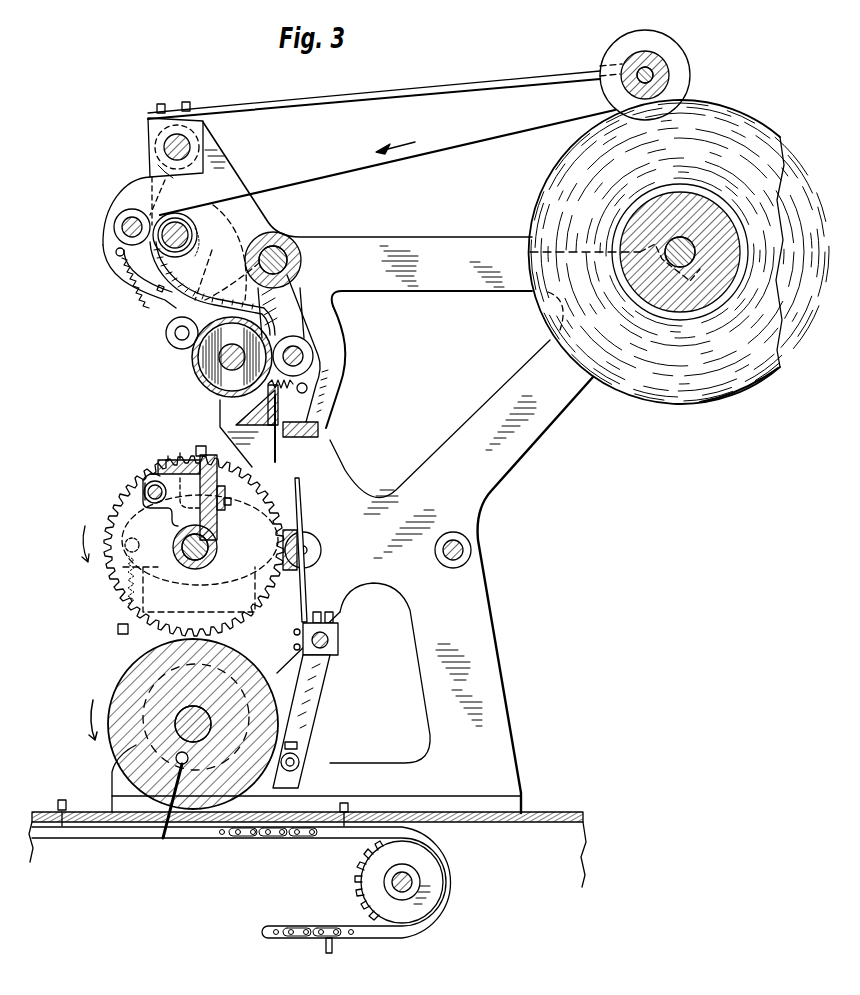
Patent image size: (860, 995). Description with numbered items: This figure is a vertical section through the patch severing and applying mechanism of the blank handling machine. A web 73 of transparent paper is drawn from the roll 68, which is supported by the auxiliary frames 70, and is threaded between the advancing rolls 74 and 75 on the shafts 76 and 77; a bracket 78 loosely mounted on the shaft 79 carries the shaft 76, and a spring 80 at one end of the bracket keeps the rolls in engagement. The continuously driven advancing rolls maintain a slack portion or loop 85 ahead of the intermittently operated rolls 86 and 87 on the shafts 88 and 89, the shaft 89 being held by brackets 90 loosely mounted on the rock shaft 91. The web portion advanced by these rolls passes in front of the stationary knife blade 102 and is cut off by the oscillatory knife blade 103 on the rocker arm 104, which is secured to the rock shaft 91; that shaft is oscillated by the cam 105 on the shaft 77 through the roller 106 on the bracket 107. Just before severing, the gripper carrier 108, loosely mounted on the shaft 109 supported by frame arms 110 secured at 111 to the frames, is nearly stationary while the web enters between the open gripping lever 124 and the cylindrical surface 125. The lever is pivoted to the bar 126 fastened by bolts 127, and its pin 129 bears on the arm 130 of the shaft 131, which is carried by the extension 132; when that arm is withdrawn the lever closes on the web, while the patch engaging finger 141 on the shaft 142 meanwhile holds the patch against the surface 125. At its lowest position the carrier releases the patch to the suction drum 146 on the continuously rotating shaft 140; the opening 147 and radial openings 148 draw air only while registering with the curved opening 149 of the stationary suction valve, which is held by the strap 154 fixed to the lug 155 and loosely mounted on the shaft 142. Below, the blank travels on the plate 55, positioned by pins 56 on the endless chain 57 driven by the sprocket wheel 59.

The plate 55 is at (540, 824).
The pins 56 is at (349, 810).
The endless chain 57 is at (329, 840).
The sprocket wheel 59 is at (437, 866).
The roll of transparent paper 68 is at (730, 120).
The auxiliary frames 70 is at (533, 438).
The web 73 is at (446, 150).
The advancing roll 74 is at (115, 222).
The advancing roll 75 is at (198, 228).
The shaft 76 is at (122, 229).
The shaft 77 is at (198, 237).
The bracket 78 is at (148, 168).
The shaft 79 is at (195, 143).
The spring 80 is at (148, 286).
The slack portion or loop 85 is at (180, 292).
The intermittently operated roll 86 is at (208, 382).
The intermittently operated roll 87 is at (293, 338).
The shaft 88 is at (243, 356).
The shaft 89 is at (305, 355).
The brackets 90 is at (318, 326).
The rock shaft 91 is at (281, 240).
The stationary knife blade 102 is at (268, 432).
The oscillatory knife blade 103 is at (300, 438).
The rocker arm 104 is at (340, 373).
The cam 105 is at (112, 275).
The roller 106 is at (166, 338).
The bracket 107 is at (250, 266).
The gripper carrier 108 is at (220, 522).
The shaft 109 is at (180, 547).
The frame arms 110 is at (306, 535).
The securing point 111 is at (318, 542).
The gripping lever 124 is at (202, 446).
The cylindrical surface 125 is at (185, 455).
The bar 126 is at (216, 490).
The bolts 127 is at (231, 501).
The pin 129 is at (169, 492).
The arm 130 is at (155, 472).
The shaft 131 is at (144, 492).
The extension 132 is at (160, 506).
The shaft 140 is at (298, 656).
The patch engaging finger 141 is at (308, 598).
The shaft 142 is at (320, 630).
The suction drum 146 is at (128, 694).
The opening 147 is at (176, 760).
The radial openings 148 is at (170, 815).
The curved opening 149 is at (140, 736).
The strap 154 is at (322, 692).
The projecting lug 155 is at (300, 756).